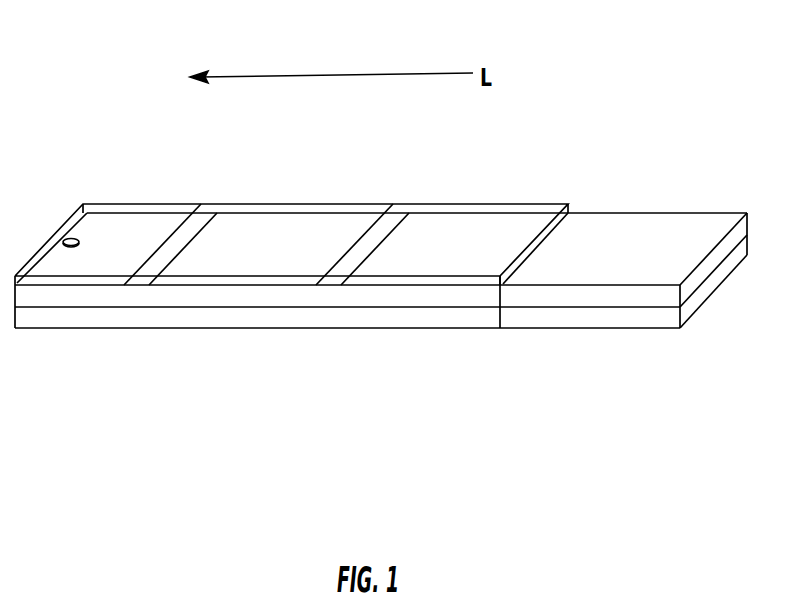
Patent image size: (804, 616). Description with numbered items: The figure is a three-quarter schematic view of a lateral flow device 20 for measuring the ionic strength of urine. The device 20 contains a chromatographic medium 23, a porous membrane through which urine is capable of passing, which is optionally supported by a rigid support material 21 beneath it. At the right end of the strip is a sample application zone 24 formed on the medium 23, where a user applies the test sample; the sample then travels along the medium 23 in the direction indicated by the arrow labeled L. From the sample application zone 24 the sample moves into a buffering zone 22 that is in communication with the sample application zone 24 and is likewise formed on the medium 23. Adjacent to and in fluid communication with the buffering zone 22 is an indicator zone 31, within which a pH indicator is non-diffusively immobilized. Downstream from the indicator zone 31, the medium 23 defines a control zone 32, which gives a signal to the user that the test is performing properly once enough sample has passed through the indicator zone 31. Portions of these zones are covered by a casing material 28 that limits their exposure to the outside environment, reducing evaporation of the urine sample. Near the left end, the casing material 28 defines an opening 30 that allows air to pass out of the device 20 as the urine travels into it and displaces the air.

The lateral flow device 20 is at (603, 122).
The rigid support material 21 is at (208, 315).
The buffering zone 22 is at (460, 237).
The chromatographic medium 23 is at (447, 296).
The sample application zone 24 is at (648, 230).
The casing material 28 is at (275, 279).
The opening 30 is at (69, 236).
The indicator zone 31 is at (368, 238).
The control zone 32 is at (190, 230).